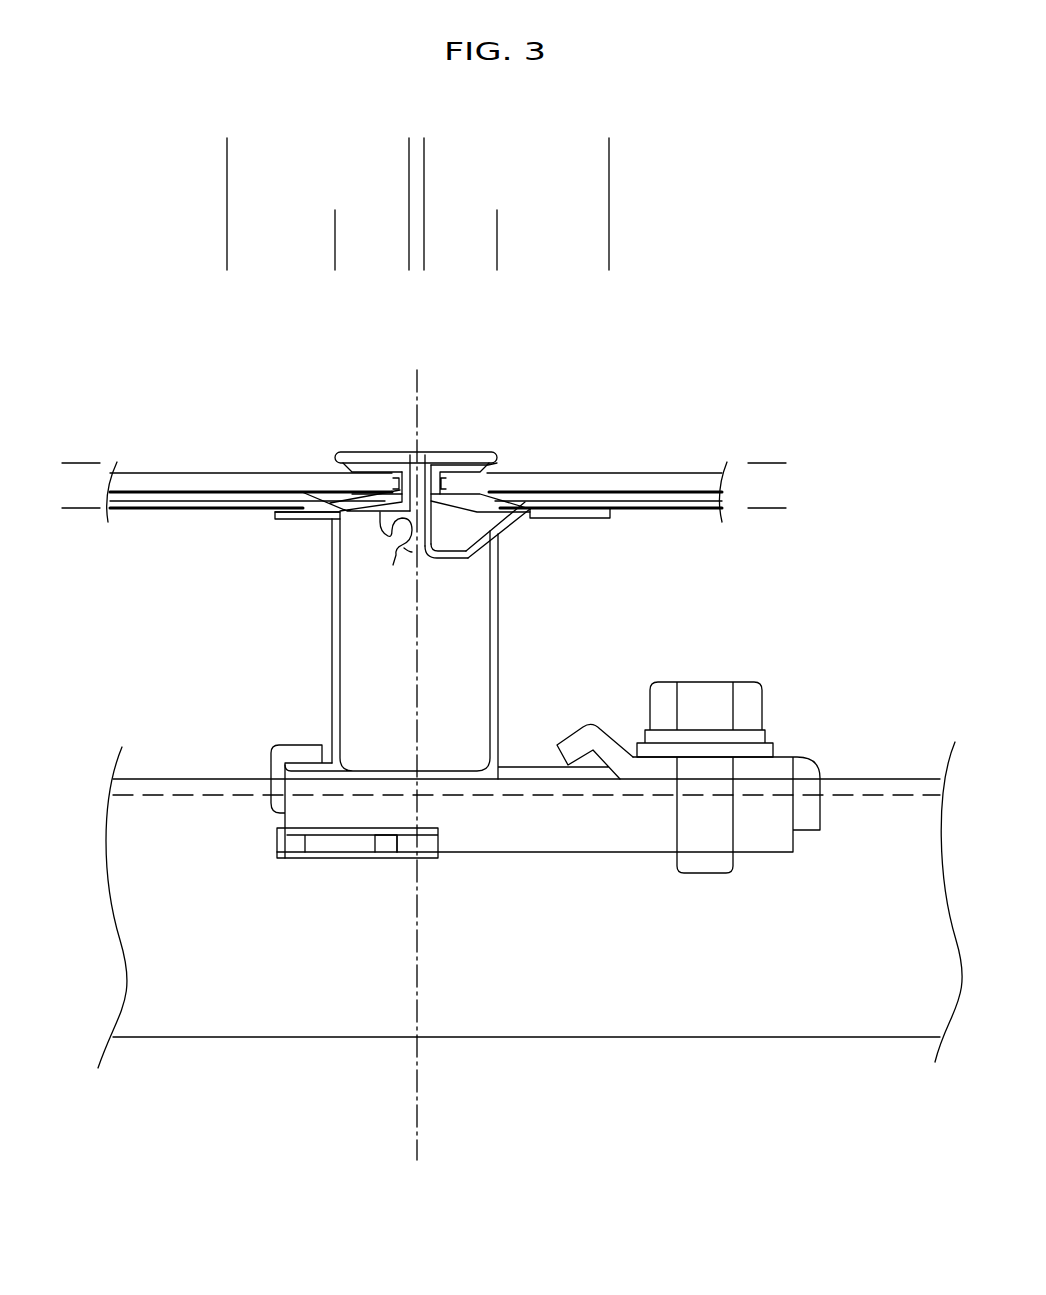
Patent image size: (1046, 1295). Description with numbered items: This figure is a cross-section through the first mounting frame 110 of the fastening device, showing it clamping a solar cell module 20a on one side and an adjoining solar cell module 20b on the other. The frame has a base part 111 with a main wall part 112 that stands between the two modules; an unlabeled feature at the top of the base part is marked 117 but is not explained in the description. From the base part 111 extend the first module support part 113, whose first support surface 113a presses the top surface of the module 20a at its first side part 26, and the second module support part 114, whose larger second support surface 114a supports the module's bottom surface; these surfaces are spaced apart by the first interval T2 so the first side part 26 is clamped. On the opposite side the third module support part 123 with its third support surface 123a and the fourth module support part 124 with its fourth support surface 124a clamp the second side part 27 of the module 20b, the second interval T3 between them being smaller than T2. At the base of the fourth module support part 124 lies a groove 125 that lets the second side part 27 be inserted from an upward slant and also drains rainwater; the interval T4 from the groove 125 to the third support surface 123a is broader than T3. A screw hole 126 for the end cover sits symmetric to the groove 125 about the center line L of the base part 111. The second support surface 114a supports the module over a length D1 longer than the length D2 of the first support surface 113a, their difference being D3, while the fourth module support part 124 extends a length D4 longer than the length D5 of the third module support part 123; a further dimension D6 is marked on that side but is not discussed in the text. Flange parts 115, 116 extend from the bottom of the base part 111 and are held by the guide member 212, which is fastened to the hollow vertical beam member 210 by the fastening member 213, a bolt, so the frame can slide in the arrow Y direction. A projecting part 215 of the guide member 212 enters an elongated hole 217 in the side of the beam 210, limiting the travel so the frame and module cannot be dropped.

The solar cell module 20a is at (148, 420).
The adjoining solar cell module 20b is at (700, 447).
The first side part 26 is at (382, 485).
The second side part 27 is at (505, 522).
The first mounting frame 110 is at (423, 577).
The base part 111 is at (338, 655).
The main wall part 112 is at (412, 470).
The first module support part 113 is at (346, 452).
The first support surface 113a is at (340, 470).
The second module support part 114 is at (288, 520).
The second support surface 114a is at (240, 520).
The flange part 115 is at (527, 775).
The flange part 116 is at (308, 770).
The center neck portion 117 is at (430, 450).
The third module support part 123 is at (492, 458).
The third support surface 123a is at (457, 470).
The fourth module support part 124 is at (565, 518).
The fourth support surface 124a is at (600, 518).
The groove 125 is at (458, 560).
The screw hole 126 is at (393, 566).
The vertical beam member 210 is at (888, 783).
The guide member 212 is at (787, 744).
The fastening member 213 is at (703, 695).
The projecting part 215 is at (331, 845).
The elongated hole 217 is at (430, 860).
The length of second support surface D1 is at (409, 154).
The length of first support surface D2 is at (335, 226).
The difference of length D3 is at (335, 226).
The length of fourth module support part D4 is at (609, 154).
The length of third module support part D5 is at (497, 226).
The dimension D6 is at (497, 226).
The first interval T2 is at (83, 463).
The second interval T3 is at (770, 463).
The interval between groove and third support surface T4 is at (528, 500).
The arrow Y direction Y is at (72, 705).
The center line L is at (420, 1122).